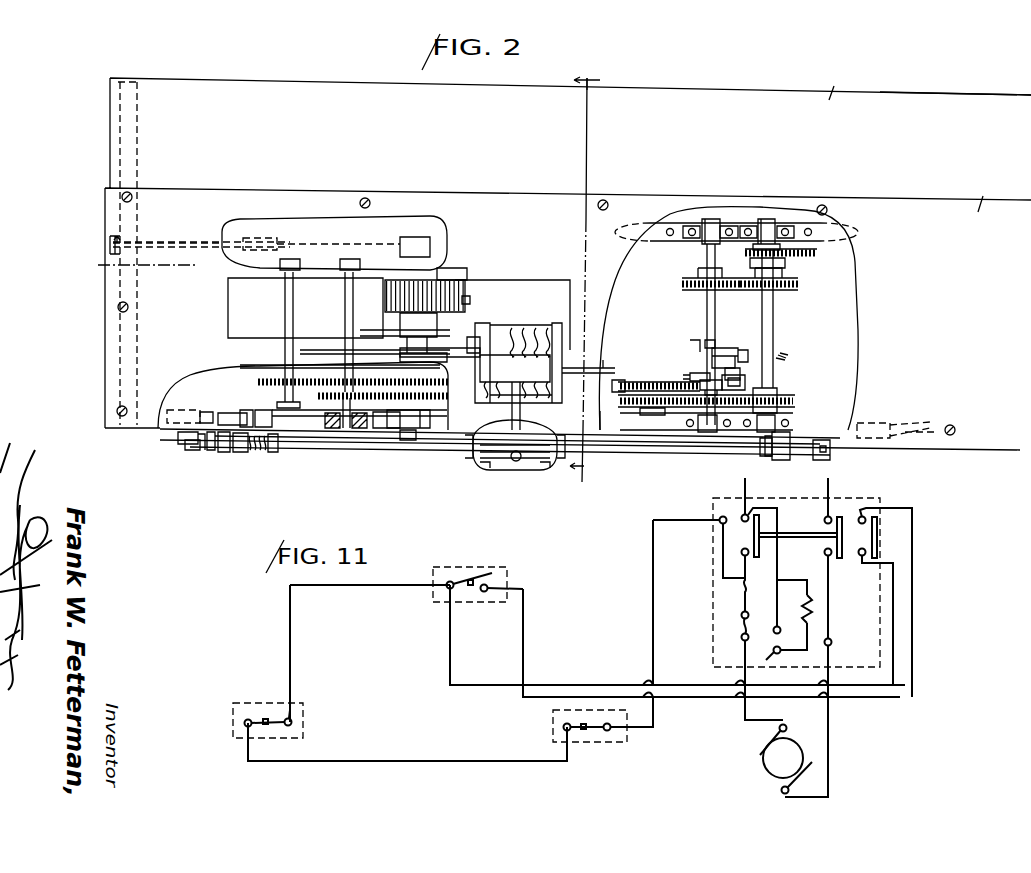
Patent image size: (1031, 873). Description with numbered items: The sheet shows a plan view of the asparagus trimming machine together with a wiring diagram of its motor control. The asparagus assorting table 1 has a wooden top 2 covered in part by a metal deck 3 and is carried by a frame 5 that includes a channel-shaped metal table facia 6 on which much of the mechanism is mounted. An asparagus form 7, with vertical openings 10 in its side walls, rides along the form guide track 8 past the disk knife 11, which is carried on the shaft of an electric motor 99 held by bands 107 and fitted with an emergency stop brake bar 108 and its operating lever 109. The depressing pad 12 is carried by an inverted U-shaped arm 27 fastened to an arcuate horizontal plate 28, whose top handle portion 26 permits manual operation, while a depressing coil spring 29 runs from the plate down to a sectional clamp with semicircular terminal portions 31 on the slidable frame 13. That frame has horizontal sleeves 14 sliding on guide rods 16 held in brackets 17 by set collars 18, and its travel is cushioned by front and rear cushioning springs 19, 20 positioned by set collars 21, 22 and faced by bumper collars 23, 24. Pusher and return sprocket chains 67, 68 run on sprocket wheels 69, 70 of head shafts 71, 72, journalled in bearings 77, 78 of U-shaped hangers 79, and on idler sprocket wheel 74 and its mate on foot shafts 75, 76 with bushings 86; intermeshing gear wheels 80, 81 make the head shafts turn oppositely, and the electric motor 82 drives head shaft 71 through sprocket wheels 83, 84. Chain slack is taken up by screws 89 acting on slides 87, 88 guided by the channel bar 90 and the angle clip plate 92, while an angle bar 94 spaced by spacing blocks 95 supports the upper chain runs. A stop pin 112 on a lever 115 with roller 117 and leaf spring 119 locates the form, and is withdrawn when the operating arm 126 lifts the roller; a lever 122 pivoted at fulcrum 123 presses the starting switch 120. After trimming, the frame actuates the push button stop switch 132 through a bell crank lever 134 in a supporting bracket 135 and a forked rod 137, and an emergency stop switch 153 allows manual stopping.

In FIG. 2, the asparagus assorting table 1 is at (912, 84).
In FIG. 2, the wooden top 2 is at (835, 83).
In FIG. 2, the metal deck 3 is at (988, 194).
In FIG. 2, the frame 5 is at (140, 143).
In FIG. 2, the metal table facia 6 is at (449, 452).
In FIG. 2, the asparagus form 7 is at (572, 345).
In FIG. 2, the form guide track 8 is at (594, 367).
In FIG. 2, the vertical openings 10 is at (93, 246).
In FIG. 2, the disk knife 11 is at (363, 352).
In FIG. 2, the depressing pad 12 is at (513, 358).
In FIG. 2, the slidable frame 13 is at (325, 400).
In FIG. 2, the horizontal sleeves 14 is at (478, 442).
In FIG. 2, the guide rods 16 is at (394, 447).
In FIG. 2, the brackets 17 is at (220, 455).
In FIG. 2, the set collars 18 is at (206, 452).
In FIG. 2, the front cushioning spring 19 is at (248, 450).
In FIG. 2, the rear cushioning spring 20 is at (773, 444).
In FIG. 2, the set collar 21 is at (232, 458).
In FIG. 2, the set collar 22 is at (795, 446).
In FIG. 2, the bumper collar 23 is at (256, 450).
In FIG. 2, the bumper collar 24 is at (768, 447).
In FIG. 2, the top handle portion 26 is at (507, 470).
In FIG. 2, the inverted U-shaped arm 27 is at (520, 414).
In FIG. 2, the horizontal plate 28 is at (538, 448).
In FIG. 2, the depressing coil spring 29 is at (515, 462).
In FIG. 2, the semicircular terminal portions 31 is at (478, 472).
In FIG. 2, the pusher sprocket chain 67 is at (652, 415).
In FIG. 2, the return sprocket chain 68 is at (645, 380).
In FIG. 2, the sprocket wheel 69 is at (778, 405).
In FIG. 2, the sprocket wheel 70 is at (745, 380).
In FIG. 2, the head shaft 71 is at (767, 320).
In FIG. 2, the head shaft 72 is at (709, 308).
In FIG. 2, the idler sprocket wheel 74 is at (263, 378).
In FIG. 2, the foot shaft 75 is at (344, 291).
In FIG. 2, the foot shaft 76 is at (286, 300).
In FIG. 2, the bearing 77 is at (778, 222).
In FIG. 2, the bearing 78 is at (713, 222).
In FIG. 2, the U-shaped hangers 79 is at (826, 212).
In FIG. 2, the gear wheel 80 is at (800, 285).
In FIG. 2, the gear wheel 81 is at (684, 280).
In FIG. 11, the electric motor 82 is at (778, 768).
In FIG. 2, the sprocket wheel 83 is at (753, 258).
In FIG. 2, the sprocket wheel 84 is at (818, 255).
In FIG. 2, the bushings 86 is at (362, 435).
In FIG. 2, the slide 87 is at (322, 258).
In FIG. 2, the slide 88 is at (356, 442).
In FIG. 2, the screws 89 is at (196, 236).
In FIG. 2, the longitudinal channel bar 90 is at (425, 252).
In FIG. 2, the angle clip plate 92 is at (250, 416).
In FIG. 2, the angle bar 94 is at (330, 377).
In FIG. 2, the spacing blocks 95 is at (408, 438).
In FIG. 2, the electric motor 99 is at (462, 300).
In FIG. 2, the bands 107 is at (452, 280).
In FIG. 2, the emergency stop brake bar 108 is at (437, 337).
In FIG. 2, the operating lever 109 is at (373, 330).
In FIG. 2, the stop pin 112 is at (690, 384).
In FIG. 2, the lever 115 is at (700, 377).
In FIG. 2, the roller 117 is at (783, 357).
In FIG. 2, the leaf spring 119 is at (733, 370).
In FIG. 2, the starting switch 120 is at (722, 348).
In FIG. 11, the starting switch 120 is at (443, 571).
In FIG. 2, the lever 122 is at (690, 340).
In FIG. 2, the fulcrum 123 is at (712, 343).
In FIG. 2, the operating arm 126 is at (617, 387).
In FIG. 2, the push button stop switch 132 is at (228, 306).
In FIG. 11, the push button stop switch 132 is at (255, 708).
In FIG. 2, the bell crank lever 134 is at (185, 438).
In FIG. 2, the supporting bracket 135 is at (192, 442).
In FIG. 2, the rod 137 is at (200, 446).
In FIG. 2, the emergency stop switch 153 is at (890, 424).
In FIG. 11, the emergency stop switch 153 is at (596, 741).